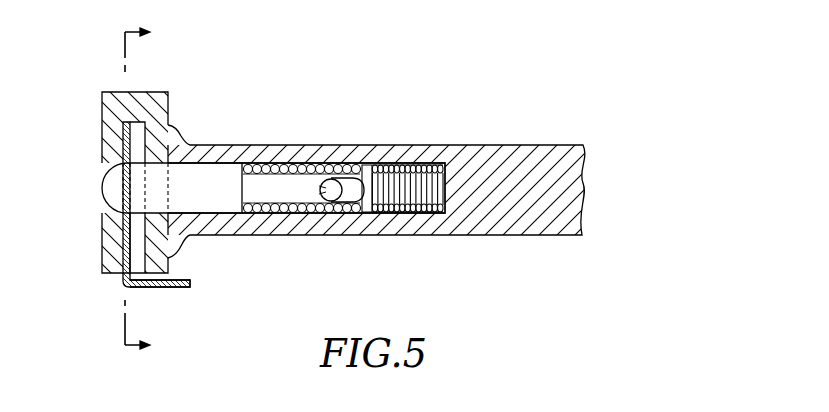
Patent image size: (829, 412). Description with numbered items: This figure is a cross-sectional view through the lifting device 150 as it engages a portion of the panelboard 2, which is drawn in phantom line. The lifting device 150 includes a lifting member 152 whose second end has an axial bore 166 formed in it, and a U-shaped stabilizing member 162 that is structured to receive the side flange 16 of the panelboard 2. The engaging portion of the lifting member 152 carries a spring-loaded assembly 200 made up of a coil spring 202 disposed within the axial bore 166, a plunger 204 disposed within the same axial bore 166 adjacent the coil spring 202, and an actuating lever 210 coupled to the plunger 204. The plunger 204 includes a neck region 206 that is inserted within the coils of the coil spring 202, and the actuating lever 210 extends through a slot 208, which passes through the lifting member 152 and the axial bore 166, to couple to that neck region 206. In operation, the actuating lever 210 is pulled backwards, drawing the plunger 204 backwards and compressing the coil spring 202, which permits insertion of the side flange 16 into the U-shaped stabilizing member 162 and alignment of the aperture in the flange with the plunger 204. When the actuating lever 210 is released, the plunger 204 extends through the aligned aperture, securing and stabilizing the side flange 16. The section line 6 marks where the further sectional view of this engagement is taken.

The panelboard 2 is at (180, 306).
The section line 6- 6 is at (121, 191).
The side flange 16 is at (114, 285).
The lifting device 150 is at (542, 278).
The lifting member 152 is at (496, 111).
The U-shaped member 162 is at (108, 243).
The axial bore 166 is at (235, 210).
The spring-loaded assembly 200 is at (309, 133).
The coil spring 202 is at (410, 167).
The plunger 204 is at (112, 182).
The neck region 206 is at (262, 165).
The slot 208 is at (373, 167).
The actuating lever 210 is at (320, 191).